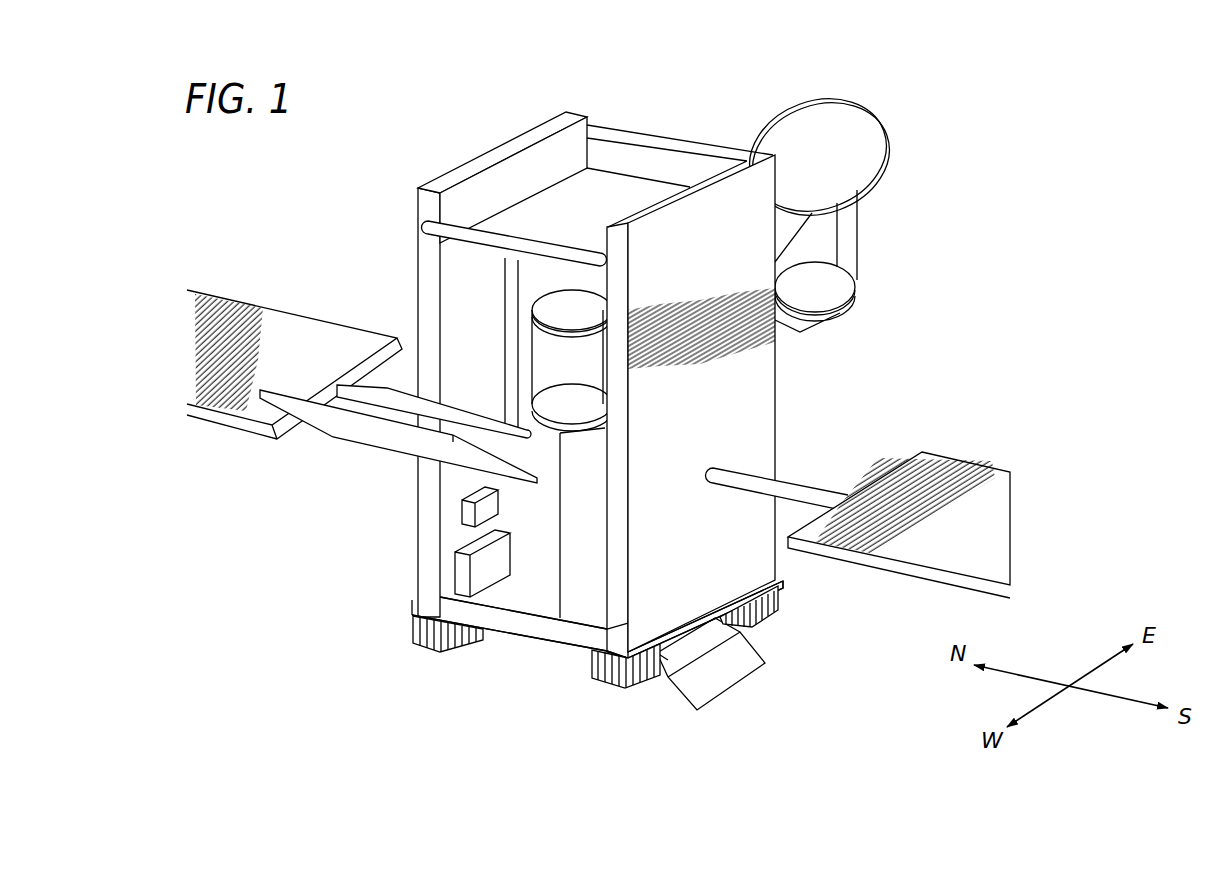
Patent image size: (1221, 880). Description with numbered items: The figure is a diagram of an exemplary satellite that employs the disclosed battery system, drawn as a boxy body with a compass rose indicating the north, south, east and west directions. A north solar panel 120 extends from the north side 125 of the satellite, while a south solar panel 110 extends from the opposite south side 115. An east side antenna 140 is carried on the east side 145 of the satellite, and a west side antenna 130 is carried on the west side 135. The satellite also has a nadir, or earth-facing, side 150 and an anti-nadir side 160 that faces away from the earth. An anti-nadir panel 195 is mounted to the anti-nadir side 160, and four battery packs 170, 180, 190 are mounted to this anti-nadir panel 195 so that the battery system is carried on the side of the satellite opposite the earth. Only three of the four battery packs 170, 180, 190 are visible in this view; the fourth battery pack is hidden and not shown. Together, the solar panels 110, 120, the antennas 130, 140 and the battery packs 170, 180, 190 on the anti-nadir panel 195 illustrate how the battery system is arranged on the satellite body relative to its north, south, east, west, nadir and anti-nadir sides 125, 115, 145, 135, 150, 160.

The south solar panel 110 is at (294, 292).
The south side 115 is at (398, 474).
The north solar panel 120 is at (950, 440).
The north side 125 is at (742, 396).
The west side antenna 130 is at (427, 379).
The west side 135 is at (452, 521).
The east side antenna 140 is at (835, 73).
The east side 145 is at (787, 427).
The nadir side 150 is at (651, 122).
The anti-nadir side 160 is at (517, 658).
The battery pack 170 is at (409, 634).
The battery pack 180 is at (628, 699).
The battery pack 190 is at (778, 627).
The anti-nadir panel 195 is at (414, 616).